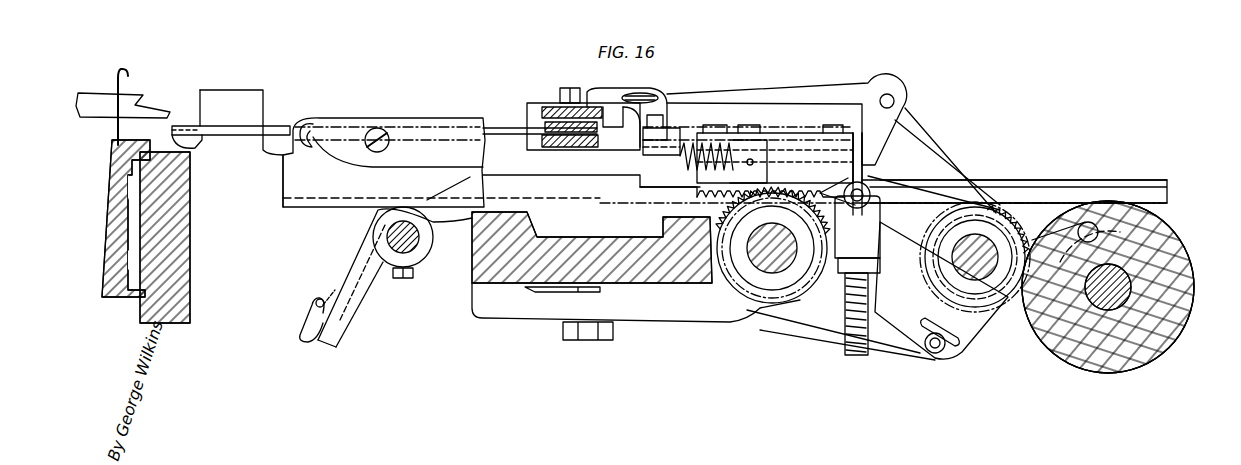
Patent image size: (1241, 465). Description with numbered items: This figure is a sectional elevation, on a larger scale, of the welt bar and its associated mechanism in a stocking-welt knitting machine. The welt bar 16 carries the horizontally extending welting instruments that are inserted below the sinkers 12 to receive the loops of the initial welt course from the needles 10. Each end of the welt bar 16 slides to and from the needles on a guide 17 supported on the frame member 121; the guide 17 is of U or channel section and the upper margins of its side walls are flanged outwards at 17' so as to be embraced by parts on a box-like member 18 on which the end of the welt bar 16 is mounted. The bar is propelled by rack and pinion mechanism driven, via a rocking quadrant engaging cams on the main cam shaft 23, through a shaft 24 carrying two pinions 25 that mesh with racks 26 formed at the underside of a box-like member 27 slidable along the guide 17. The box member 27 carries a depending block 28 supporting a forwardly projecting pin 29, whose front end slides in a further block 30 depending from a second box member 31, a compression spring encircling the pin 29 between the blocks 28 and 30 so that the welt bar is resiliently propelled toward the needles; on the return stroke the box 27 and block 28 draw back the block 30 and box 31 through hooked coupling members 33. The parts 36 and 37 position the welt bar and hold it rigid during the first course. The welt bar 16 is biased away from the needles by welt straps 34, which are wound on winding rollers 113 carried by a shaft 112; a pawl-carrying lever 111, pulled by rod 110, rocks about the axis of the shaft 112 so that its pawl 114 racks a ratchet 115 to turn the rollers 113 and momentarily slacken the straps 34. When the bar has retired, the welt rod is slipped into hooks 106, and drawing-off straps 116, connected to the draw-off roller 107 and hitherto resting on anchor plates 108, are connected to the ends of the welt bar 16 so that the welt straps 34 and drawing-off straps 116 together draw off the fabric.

The needles 10 is at (126, 72).
The sinkers 12 is at (95, 103).
The welt bar 16 is at (568, 133).
The guide 17 is at (223, 105).
The outward flanges 17' is at (186, 103).
The box-like member 18 is at (533, 104).
The main cam shaft 23 is at (773, 281).
The shaft 24 is at (765, 270).
The pinions 25 is at (786, 292).
The racks 26 is at (870, 172).
The box-like member 27 is at (795, 160).
The depending block 28 is at (770, 150).
The forwardly projecting pin 29 is at (748, 145).
The further block 30 is at (688, 138).
The box member 31 is at (658, 135).
The hooked coupling members 33 is at (640, 197).
The welt straps 34 is at (916, 112).
The positioning part 36 is at (613, 96).
The positioning part 37 is at (237, 97).
The hooks 106 is at (311, 127).
The draw-off roller 107 is at (1185, 310).
The anchor plates 108 is at (342, 326).
The rod 110 is at (860, 352).
The pawl-carrying lever 111 is at (912, 235).
The shaft 112 is at (977, 272).
The winding rollers 113 is at (992, 300).
The pawl 114 is at (1058, 192).
The ratchet 115 is at (1010, 218).
The drawing-off straps 116 is at (320, 297).
The frame member 121 is at (482, 272).